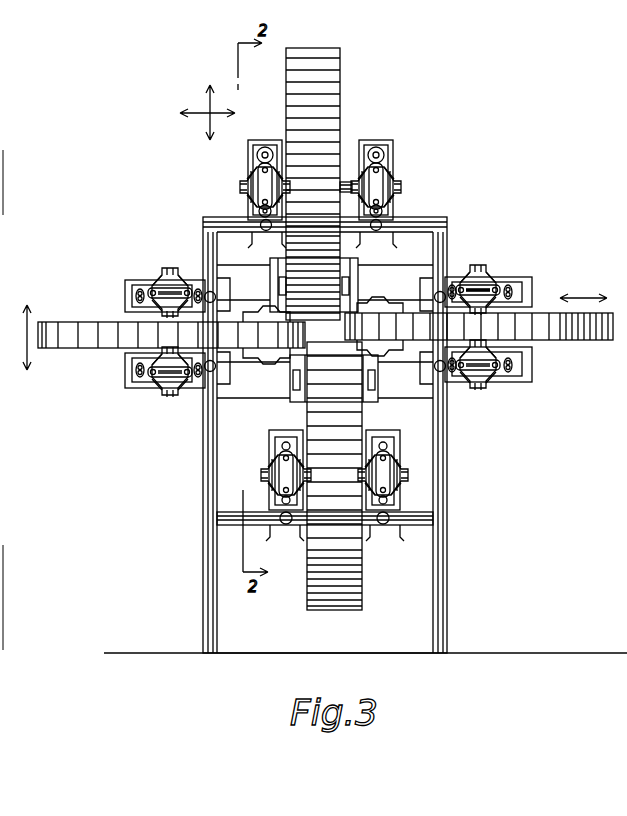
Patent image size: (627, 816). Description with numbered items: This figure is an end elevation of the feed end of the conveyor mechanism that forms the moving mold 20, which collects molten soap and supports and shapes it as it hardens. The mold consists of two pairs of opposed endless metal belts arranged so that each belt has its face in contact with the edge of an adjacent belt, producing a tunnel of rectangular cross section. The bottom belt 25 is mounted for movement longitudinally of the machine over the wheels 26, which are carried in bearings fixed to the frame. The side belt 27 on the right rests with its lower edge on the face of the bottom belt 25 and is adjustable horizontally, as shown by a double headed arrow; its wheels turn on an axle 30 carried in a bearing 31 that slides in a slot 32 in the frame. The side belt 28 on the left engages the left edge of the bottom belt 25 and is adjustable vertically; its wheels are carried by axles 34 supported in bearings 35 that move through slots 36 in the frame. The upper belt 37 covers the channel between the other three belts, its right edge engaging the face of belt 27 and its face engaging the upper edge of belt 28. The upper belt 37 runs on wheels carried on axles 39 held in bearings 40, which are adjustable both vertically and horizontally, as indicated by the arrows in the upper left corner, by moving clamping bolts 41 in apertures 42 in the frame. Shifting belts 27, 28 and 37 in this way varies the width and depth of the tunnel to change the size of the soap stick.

The mold 20 is at (435, 199).
The bottom belt 25 is at (352, 571).
The wheels 26 is at (334, 470).
The side belt 27 is at (580, 332).
The side belt 28 is at (86, 340).
The axle 30 is at (480, 268).
The bearing 31 is at (484, 290).
The slot 32 is at (518, 285).
The axles 34 is at (172, 268).
The bearings 35 is at (150, 292).
The slots 36 is at (142, 378).
The upper belt 37 is at (325, 72).
The axles 39 is at (347, 183).
The bearings 40 is at (382, 182).
The clamping bolts 41 is at (266, 150).
The apertures 42 is at (248, 160).